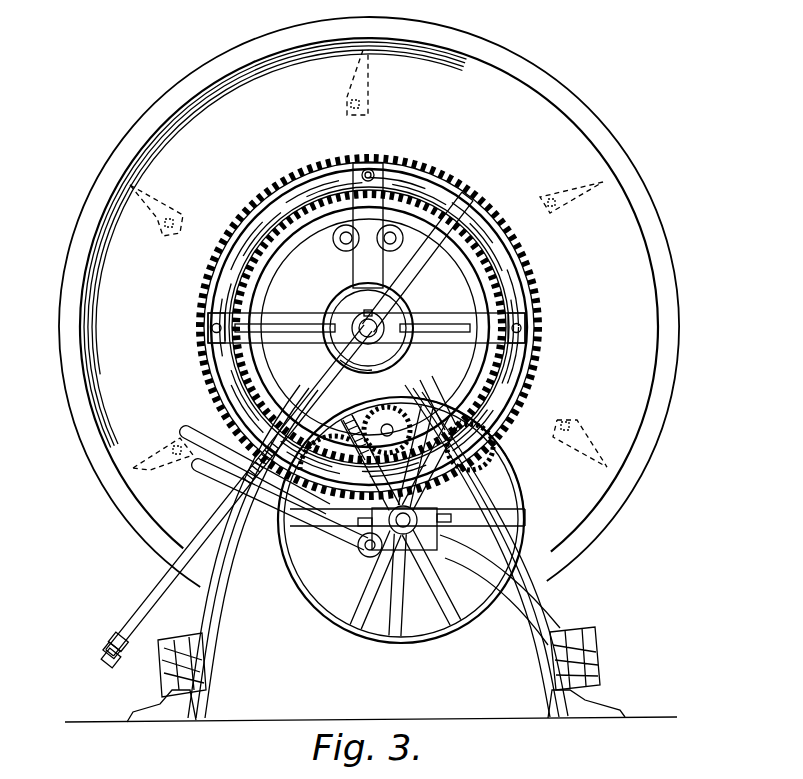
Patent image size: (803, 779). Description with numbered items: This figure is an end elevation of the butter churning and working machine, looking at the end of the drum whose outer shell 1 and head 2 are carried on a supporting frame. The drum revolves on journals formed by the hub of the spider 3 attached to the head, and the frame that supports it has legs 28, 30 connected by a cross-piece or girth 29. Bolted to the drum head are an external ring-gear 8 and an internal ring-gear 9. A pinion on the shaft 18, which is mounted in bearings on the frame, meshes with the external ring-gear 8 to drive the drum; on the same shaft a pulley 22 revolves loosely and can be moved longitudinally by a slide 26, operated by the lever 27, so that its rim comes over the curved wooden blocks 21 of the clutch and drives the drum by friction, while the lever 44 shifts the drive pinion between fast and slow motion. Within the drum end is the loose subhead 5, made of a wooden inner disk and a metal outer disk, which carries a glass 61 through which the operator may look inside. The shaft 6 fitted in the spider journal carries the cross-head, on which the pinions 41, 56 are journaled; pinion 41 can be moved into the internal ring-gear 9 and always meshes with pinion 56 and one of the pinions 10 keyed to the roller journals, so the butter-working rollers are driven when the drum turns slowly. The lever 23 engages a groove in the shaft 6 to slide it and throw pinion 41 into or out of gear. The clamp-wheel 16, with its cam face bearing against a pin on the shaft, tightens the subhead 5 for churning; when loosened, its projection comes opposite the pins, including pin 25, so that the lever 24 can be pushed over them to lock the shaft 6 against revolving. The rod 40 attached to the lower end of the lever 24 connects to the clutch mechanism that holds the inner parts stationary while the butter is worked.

The outer shell of the drum 1 is at (622, 157).
The heads of the drum 2 is at (441, 213).
The spider 3 is at (366, 328).
The loose subhead 5 is at (345, 292).
The shaft 6 is at (366, 338).
The external ring-gear 8 is at (530, 264).
The internal ring-gear 9 is at (492, 283).
The pinion 10 is at (520, 303).
The clamp-wheel 16 is at (322, 347).
The shaft 18 is at (407, 528).
The curved wooden blocks 21 is at (515, 395).
The pulley 22 is at (527, 477).
The lever 23 is at (285, 300).
The lever 24 is at (478, 200).
The pin 25 is at (375, 306).
The slide 26 is at (402, 445).
The lever 27 is at (208, 478).
The leg 28 is at (520, 625).
The cross-piece or girth 29 is at (597, 660).
The leg 30 is at (540, 588).
The rod 40 is at (112, 668).
The pinion 41 is at (436, 392).
The lever 44 is at (245, 457).
The pinion 56 is at (240, 383).
The glass 61 is at (405, 242).